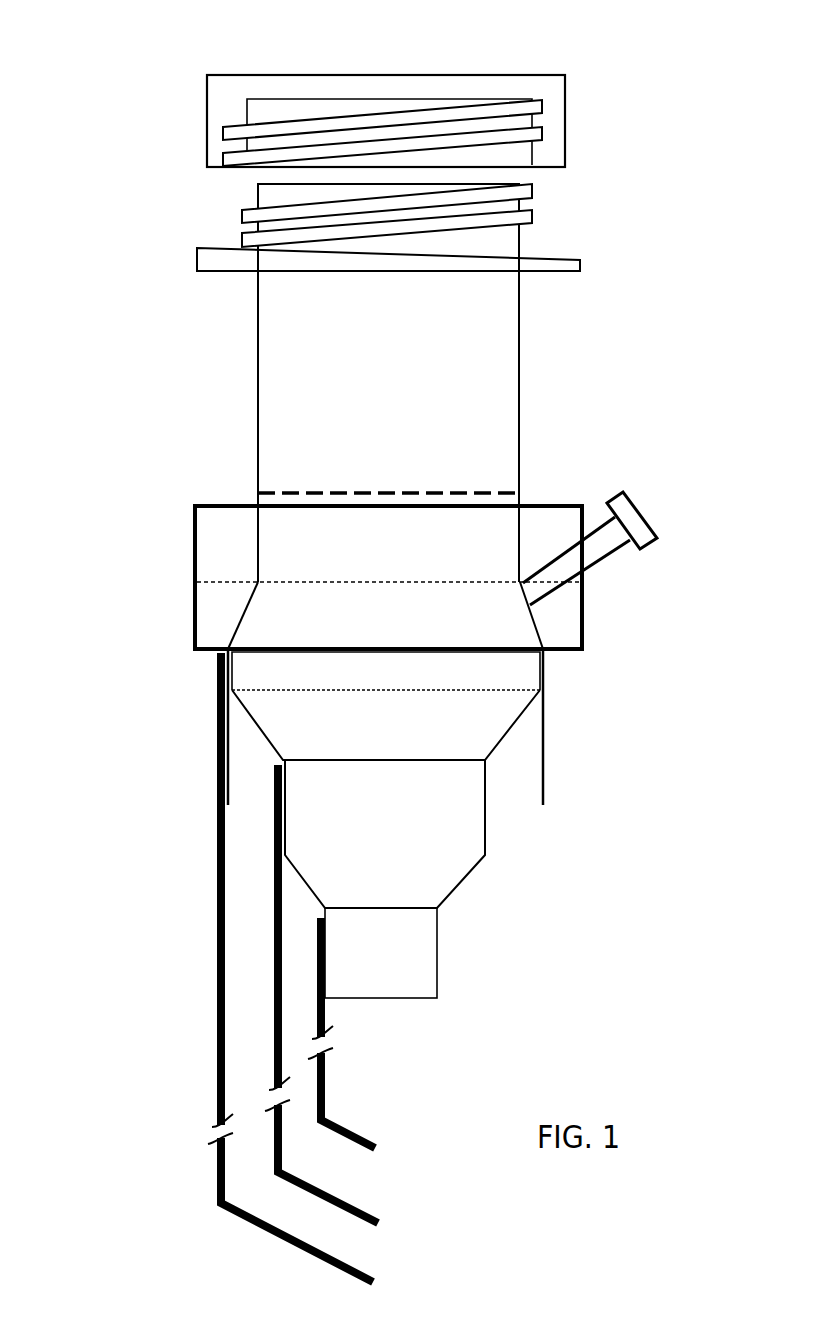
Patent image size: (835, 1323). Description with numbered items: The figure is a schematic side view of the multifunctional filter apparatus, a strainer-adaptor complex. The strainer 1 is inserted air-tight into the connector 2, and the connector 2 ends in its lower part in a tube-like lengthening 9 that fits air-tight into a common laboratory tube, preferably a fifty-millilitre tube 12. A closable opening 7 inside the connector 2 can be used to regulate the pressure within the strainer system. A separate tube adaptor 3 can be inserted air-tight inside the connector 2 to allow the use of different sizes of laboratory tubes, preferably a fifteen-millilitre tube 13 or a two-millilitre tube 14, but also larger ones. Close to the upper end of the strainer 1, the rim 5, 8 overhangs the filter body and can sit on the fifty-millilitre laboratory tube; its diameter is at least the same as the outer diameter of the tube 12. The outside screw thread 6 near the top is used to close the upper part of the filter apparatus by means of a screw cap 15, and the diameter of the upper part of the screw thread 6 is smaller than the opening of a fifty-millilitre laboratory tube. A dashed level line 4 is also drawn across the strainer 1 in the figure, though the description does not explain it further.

The strainer 1 is at (442, 403).
The connector 2 is at (387, 548).
The tube adaptor 3 is at (390, 860).
The heating zone boundary line 4 is at (313, 493).
The rim 5 is at (585, 263).
The outside screw thread 6 is at (533, 193).
The closable opening 7 is at (565, 567).
The rim 8 is at (193, 250).
The tube-like lengthening 9 is at (548, 718).
The 50 ml tube 12 is at (215, 875).
The 15 ml tube 13 is at (275, 988).
The 2 ml tube 14 is at (315, 1075).
The screw cap 15 is at (440, 103).